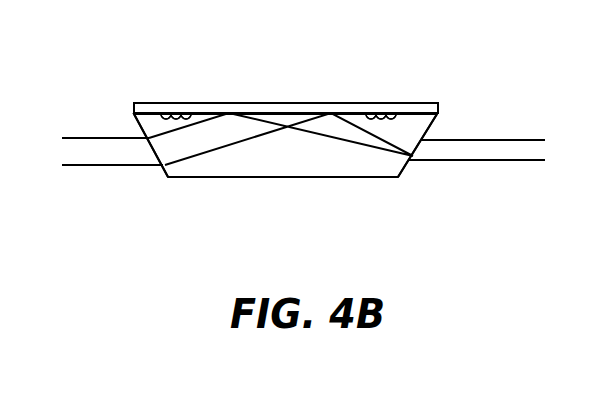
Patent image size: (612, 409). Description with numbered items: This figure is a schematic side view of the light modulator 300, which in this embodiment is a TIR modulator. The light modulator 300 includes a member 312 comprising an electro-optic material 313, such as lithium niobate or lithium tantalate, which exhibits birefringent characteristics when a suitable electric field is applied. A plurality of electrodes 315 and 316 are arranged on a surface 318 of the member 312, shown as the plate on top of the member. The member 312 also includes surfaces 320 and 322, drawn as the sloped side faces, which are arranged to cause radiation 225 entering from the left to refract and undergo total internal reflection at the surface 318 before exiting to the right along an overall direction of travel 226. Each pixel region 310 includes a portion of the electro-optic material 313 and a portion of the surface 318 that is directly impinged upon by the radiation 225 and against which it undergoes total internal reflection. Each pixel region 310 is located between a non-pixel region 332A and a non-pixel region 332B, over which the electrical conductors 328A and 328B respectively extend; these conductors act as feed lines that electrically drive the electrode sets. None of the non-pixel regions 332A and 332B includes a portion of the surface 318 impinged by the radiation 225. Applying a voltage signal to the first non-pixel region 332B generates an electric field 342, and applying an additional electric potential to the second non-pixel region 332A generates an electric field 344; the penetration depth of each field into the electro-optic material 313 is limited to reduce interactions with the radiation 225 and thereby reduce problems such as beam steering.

The light modulator 300 is at (303, 139).
The pixel region 310 is at (323, 102).
The electrodes 315 is at (300, 104).
The electrodes 316 is at (286, 68).
The electro-optic material 313 is at (263, 170).
The member 312 is at (313, 178).
The surface 320 is at (162, 178).
The surface 322 is at (403, 172).
The electric field 342 is at (382, 123).
The non-pixel region 332A is at (230, 102).
The non-pixel region 332B is at (418, 102).
The electrical conductors 328A is at (188, 112).
The electrical conductors 328B is at (395, 110).
The electric field 344 is at (160, 118).
The surface 318 is at (418, 120).
The radiation 225 is at (92, 155).
The overall direction of travel 226 is at (292, 239).